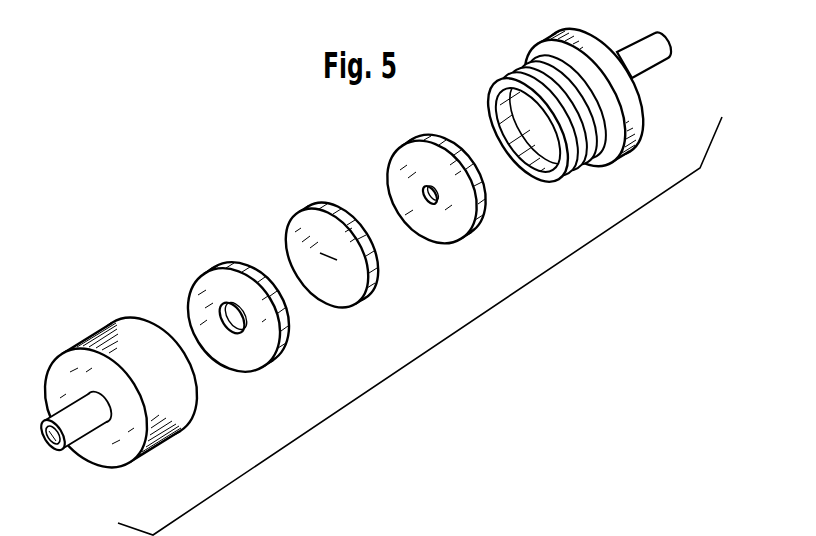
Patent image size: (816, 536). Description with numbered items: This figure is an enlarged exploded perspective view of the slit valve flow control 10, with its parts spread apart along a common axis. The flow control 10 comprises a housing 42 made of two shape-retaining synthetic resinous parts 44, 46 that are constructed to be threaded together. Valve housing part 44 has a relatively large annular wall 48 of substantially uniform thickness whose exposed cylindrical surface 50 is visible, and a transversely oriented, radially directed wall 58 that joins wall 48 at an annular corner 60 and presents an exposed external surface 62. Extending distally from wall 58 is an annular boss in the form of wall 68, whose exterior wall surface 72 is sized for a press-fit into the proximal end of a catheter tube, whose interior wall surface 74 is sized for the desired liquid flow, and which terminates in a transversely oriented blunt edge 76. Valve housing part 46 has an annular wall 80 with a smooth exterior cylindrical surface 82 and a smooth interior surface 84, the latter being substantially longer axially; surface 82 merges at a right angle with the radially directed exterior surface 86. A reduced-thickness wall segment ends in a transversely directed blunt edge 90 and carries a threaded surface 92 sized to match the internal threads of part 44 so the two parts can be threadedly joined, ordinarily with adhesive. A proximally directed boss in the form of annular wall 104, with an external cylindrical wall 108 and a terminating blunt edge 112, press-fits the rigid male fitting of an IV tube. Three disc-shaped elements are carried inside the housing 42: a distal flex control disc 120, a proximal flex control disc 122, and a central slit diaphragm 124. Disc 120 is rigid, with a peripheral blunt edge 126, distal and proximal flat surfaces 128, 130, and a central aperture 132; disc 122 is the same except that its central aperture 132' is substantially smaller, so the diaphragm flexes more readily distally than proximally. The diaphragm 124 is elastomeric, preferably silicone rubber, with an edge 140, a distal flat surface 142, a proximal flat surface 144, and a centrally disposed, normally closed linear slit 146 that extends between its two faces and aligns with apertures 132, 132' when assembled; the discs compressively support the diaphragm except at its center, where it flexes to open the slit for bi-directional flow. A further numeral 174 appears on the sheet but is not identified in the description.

The slit valve flow control 10 is at (265, 157).
The housing 42 is at (173, 437).
The valve housing part 44 is at (128, 318).
The valve housing part 46 is at (553, 38).
The annular wall 48 is at (197, 417).
The exposed cylindrical surface 50 is at (148, 384).
The radially directed wall 58 is at (120, 462).
The annular corner 60 is at (147, 453).
The external surface 62 is at (114, 442).
The annular boss wall 68 is at (70, 398).
The exterior wall surface 72 is at (74, 424).
The interior wall surface 74 is at (47, 419).
The blunt edge 76 is at (50, 453).
The annular wall 80 is at (638, 125).
The exterior cylindrical surface 82 is at (604, 93).
The interior surface 84 is at (514, 141).
The exterior surface 86 is at (518, 72).
The blunt edge 90 is at (540, 180).
The threaded surface 92 is at (582, 172).
The annular wall 104 is at (628, 45).
The external cylindrical wall 108 is at (632, 70).
The blunt edge 112 is at (672, 43).
The distal flex control disc 120 is at (206, 267).
The proximal flex control disc 122 is at (410, 143).
The slit diaphragm 124 is at (330, 203).
The peripheral blunt edge 126 is at (281, 316).
The distal flat surface 128 is at (229, 360).
The proximal flat surface 130 is at (288, 312).
The aperture 132 is at (237, 283).
The central aperture 132' is at (434, 207).
The edge 140 is at (374, 292).
The distal flat surface 142 is at (319, 291).
The proximal flat surface 144 is at (351, 205).
The linear slit 146 is at (323, 250).
The base line 174 is at (565, 534).